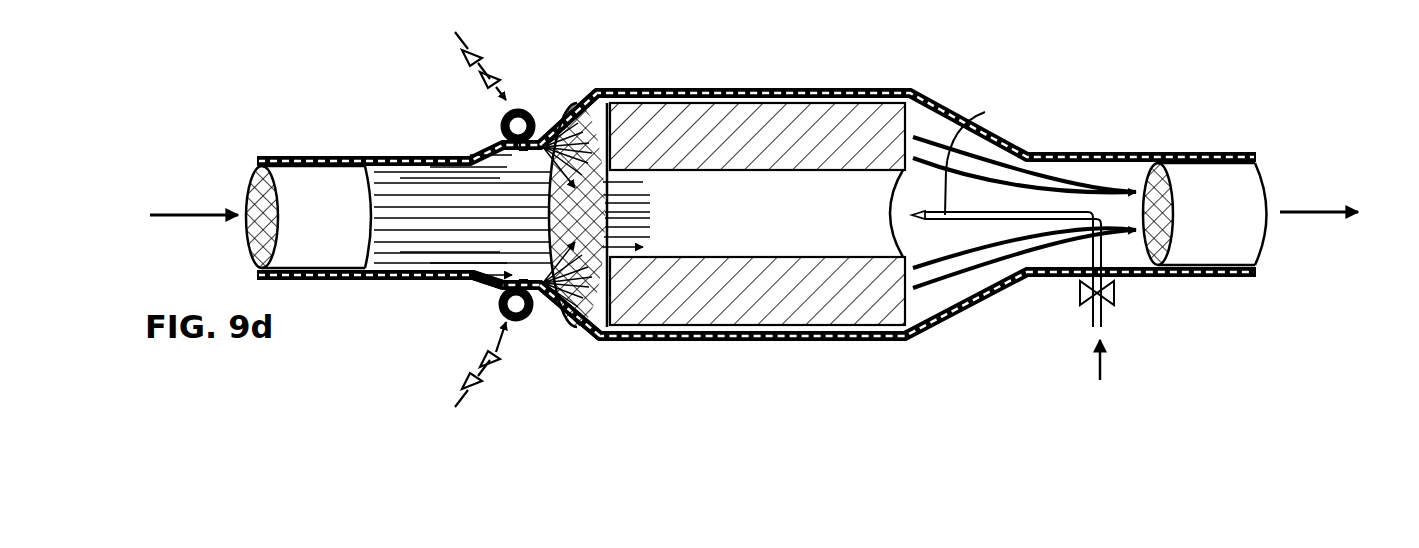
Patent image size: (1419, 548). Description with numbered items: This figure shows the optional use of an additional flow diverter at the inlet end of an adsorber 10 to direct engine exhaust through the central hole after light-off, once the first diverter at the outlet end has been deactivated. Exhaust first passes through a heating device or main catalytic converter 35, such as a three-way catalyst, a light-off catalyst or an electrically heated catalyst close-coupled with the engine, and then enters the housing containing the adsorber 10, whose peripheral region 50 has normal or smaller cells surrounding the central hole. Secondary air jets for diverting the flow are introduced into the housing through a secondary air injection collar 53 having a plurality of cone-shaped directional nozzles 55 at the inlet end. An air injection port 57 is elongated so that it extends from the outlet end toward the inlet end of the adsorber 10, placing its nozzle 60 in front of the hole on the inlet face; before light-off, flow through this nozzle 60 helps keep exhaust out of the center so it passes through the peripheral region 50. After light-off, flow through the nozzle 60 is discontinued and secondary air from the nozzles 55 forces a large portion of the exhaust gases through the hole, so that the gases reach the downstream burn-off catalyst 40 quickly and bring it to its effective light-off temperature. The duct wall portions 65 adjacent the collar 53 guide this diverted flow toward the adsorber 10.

The adsorber 10 is at (741, 226).
The heating device or main catalytic converter 35 is at (331, 175).
The burn-off catalyst 40 is at (1263, 238).
The peripheral region having normal/smaller cells 50 is at (719, 116).
The secondary air injection collar 53 is at (497, 302).
The nozzles 55 is at (528, 320).
The air injection port 57 is at (1024, 192).
The nozzle 60 is at (899, 213).
The duct 65 is at (561, 122).